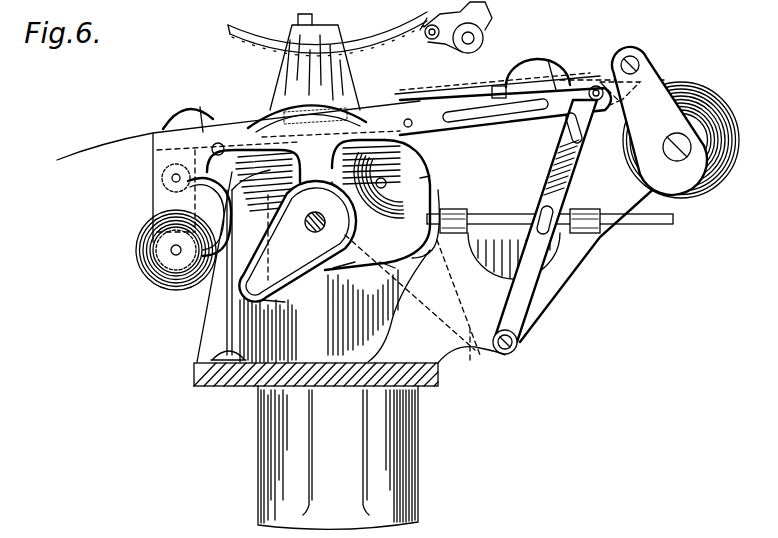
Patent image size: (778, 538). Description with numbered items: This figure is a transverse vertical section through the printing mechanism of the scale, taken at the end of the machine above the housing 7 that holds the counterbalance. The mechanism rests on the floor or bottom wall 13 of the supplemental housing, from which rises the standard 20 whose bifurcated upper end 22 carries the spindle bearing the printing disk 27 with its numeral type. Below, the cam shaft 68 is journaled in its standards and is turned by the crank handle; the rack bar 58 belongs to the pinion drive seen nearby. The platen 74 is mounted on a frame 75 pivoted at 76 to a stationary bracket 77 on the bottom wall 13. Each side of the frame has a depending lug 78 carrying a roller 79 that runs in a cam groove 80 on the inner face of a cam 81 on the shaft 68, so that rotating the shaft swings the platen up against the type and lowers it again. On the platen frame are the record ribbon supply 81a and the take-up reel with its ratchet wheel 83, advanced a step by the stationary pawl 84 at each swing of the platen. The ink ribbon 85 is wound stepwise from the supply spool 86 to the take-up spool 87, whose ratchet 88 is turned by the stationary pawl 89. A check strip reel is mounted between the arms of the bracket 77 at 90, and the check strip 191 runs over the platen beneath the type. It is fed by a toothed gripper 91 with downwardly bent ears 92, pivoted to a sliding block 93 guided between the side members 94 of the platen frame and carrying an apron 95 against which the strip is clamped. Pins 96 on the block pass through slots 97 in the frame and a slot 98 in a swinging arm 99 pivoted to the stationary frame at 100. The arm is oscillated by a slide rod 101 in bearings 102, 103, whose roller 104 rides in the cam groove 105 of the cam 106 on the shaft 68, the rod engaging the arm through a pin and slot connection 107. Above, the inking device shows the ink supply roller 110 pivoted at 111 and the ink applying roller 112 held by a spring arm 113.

The housing 7 is at (422, 472).
The floor or bottom wall 13 is at (427, 388).
The standard 20 is at (208, 333).
The upper end of standard 22 is at (286, 78).
The printing disk 27 is at (262, 47).
The rack bar 58 is at (335, 534).
The shaft 68 is at (311, 230).
The platen 74 is at (332, 110).
The frame 75 is at (618, 74).
The pivot 76 is at (643, 55).
The stationary bracket 77 is at (661, 80).
The depending lug 78 is at (333, 174).
The roller 79 is at (345, 187).
The cam groove 80 is at (334, 275).
The cam 81 is at (284, 304).
The record ribbon supply 81a is at (432, 177).
The ratchet wheel 83 is at (148, 280).
The stationary pawl 84 is at (198, 287).
The ink ribbon 85 is at (160, 150).
The supply spool 86 is at (423, 103).
The take-up spool 87 is at (157, 197).
The ratchet 88 is at (162, 179).
The stationary pawl 89 is at (237, 192).
The check strip reel mounting 90 is at (710, 178).
The toothed pawl or gripper 91 is at (538, 60).
The downwardly bent ears 92 is at (553, 75).
The sliding block 93 is at (604, 117).
The side members 94 is at (491, 128).
The apron 95 is at (497, 84).
The pins 96 is at (593, 86).
The slots 97 is at (526, 112).
The slot 98 is at (560, 142).
The swinging arm 99 is at (518, 313).
The pivot 100 is at (520, 343).
The slide rod 101 is at (658, 226).
The bearing 102 is at (440, 240).
The bearing 103 is at (587, 235).
The roller 104 is at (435, 207).
The cam groove 105 is at (388, 268).
The cam 106 is at (420, 172).
The pin and slot connection 107 is at (514, 256).
The ink supply roller 110 is at (492, 10).
The pivot 111 is at (477, 33).
The ink applying roller 112 is at (421, 42).
The spring arm 113 is at (452, 46).
The check strip 191 is at (685, 85).